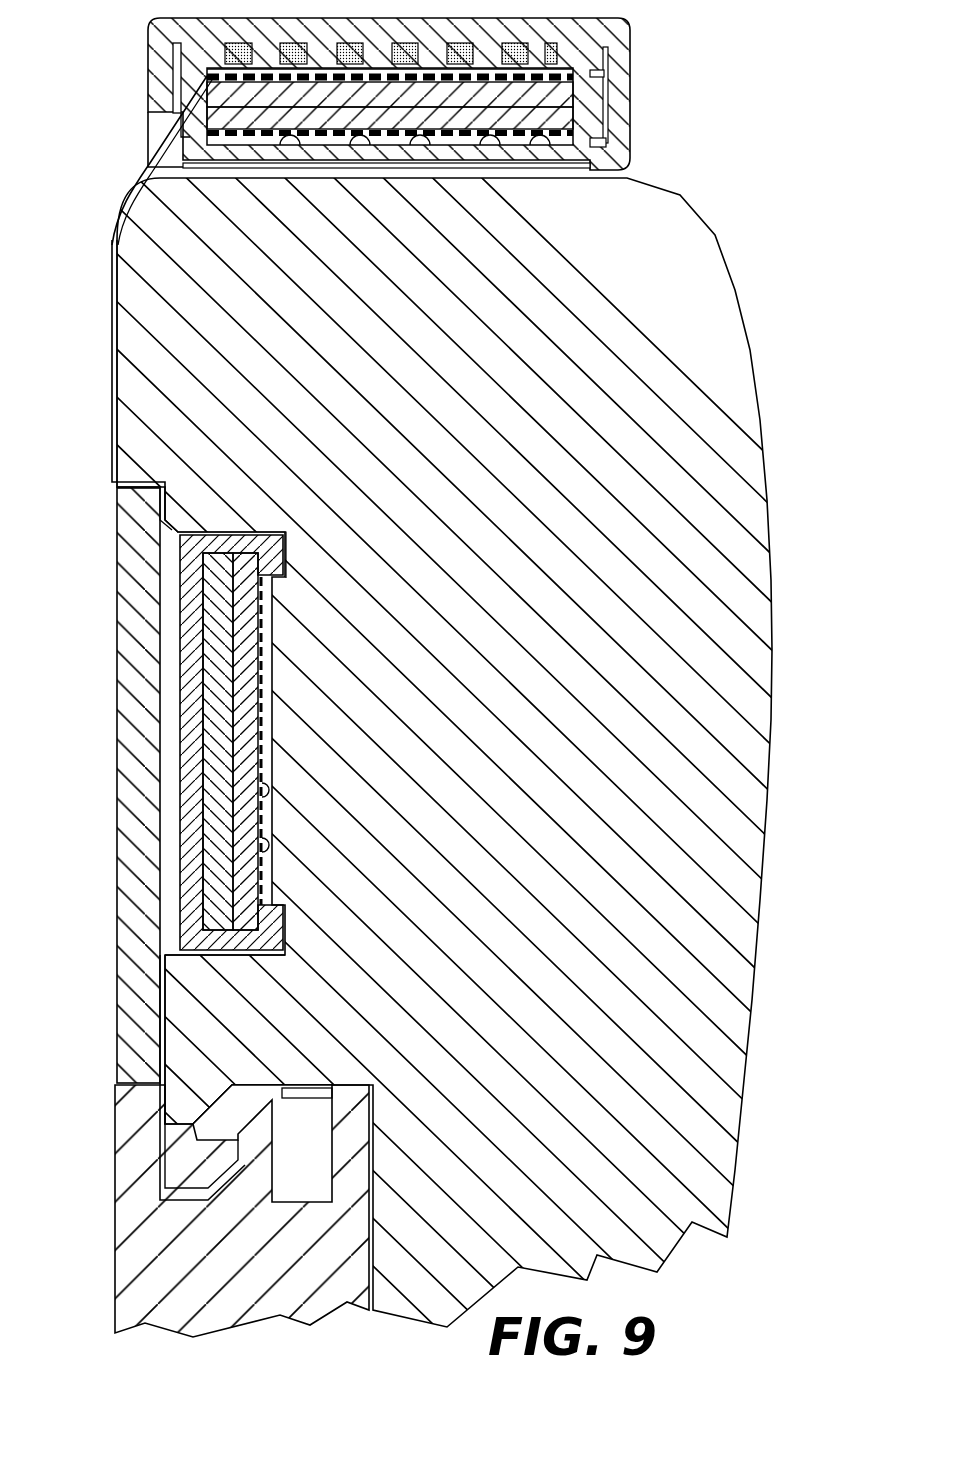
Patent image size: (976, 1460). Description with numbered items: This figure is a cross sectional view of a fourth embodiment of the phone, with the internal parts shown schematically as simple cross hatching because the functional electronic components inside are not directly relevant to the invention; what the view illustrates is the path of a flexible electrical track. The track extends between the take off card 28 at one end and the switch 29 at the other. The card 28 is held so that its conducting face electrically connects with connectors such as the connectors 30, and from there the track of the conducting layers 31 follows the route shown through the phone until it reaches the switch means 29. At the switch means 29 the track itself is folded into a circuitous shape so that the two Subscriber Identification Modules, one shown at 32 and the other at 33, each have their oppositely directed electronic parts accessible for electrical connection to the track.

The take off card 28 is at (248, 768).
The switch 29 is at (217, 86).
The connectors 30 is at (268, 738).
The track of the conducting layers 31 is at (112, 482).
The Subscriber Identification Module 32 is at (560, 97).
The Subscriber Identification Module 33 is at (567, 125).